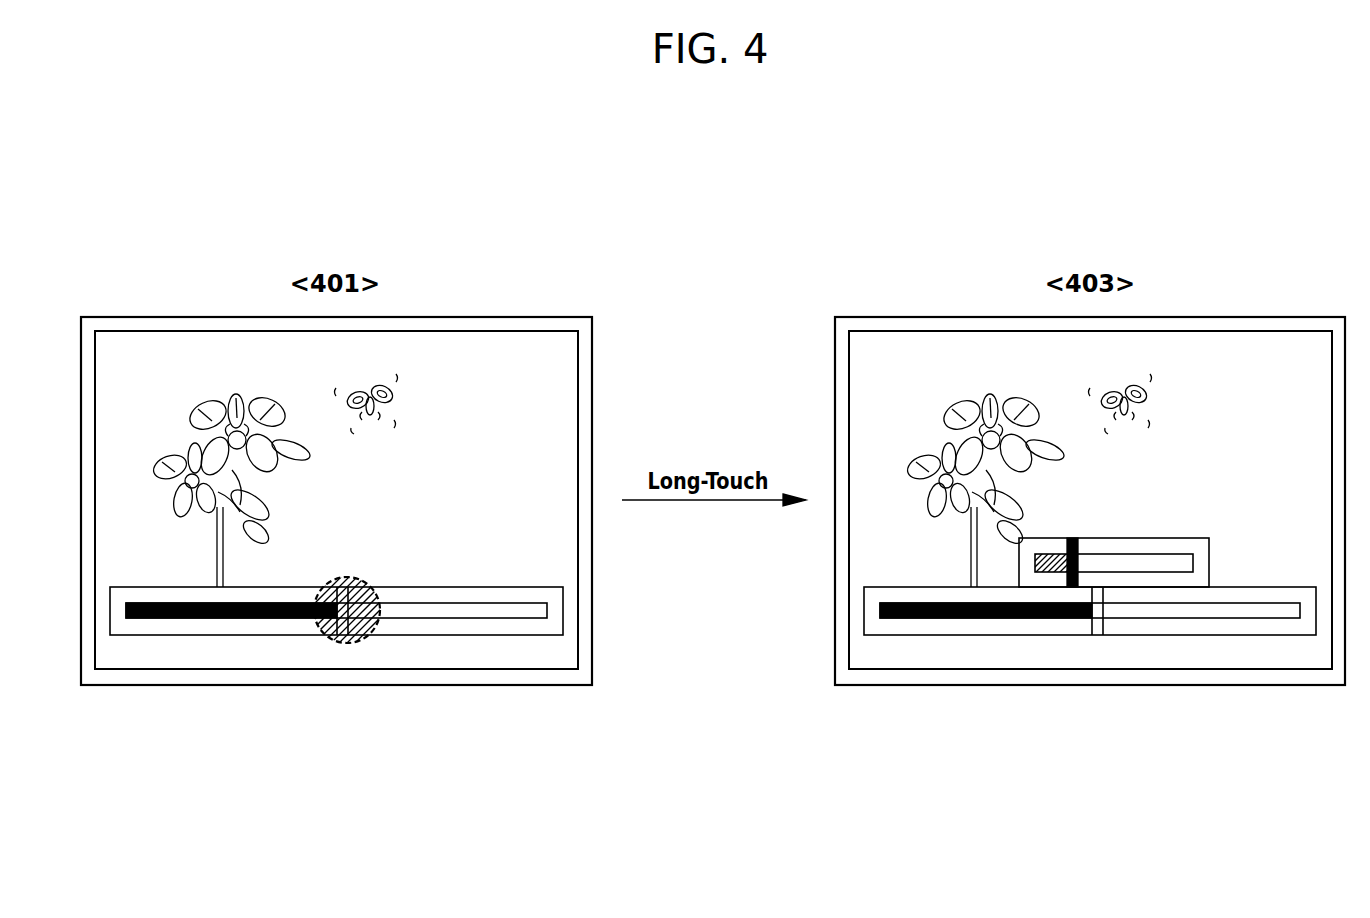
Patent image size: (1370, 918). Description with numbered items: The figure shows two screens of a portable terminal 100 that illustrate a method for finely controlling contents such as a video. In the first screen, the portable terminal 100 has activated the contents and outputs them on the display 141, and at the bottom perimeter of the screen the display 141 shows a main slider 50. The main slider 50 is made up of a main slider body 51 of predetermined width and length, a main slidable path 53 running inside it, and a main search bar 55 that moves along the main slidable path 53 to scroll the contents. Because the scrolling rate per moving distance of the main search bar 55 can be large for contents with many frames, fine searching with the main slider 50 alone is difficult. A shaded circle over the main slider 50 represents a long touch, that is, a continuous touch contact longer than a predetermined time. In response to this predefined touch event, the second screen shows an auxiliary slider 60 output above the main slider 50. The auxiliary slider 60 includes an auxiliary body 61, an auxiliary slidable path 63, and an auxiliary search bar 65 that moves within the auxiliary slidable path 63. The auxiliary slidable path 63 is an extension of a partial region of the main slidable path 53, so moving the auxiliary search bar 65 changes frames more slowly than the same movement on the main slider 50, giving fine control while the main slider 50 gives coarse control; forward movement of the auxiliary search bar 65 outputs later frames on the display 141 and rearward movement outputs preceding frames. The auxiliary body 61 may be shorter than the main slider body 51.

The portable terminal 100 is at (861, 318).
The display 141 is at (861, 411).
The main slider 50 is at (412, 501).
The main slider body 51 is at (413, 587).
The main slidable path 53 is at (470, 603).
The main search bar 55 is at (341, 578).
The auxiliary slider 60 is at (1137, 456).
The auxiliary body 61 is at (1115, 538).
The auxiliary slidable path 63 is at (1168, 554).
The auxiliary search bar 65 is at (1074, 538).